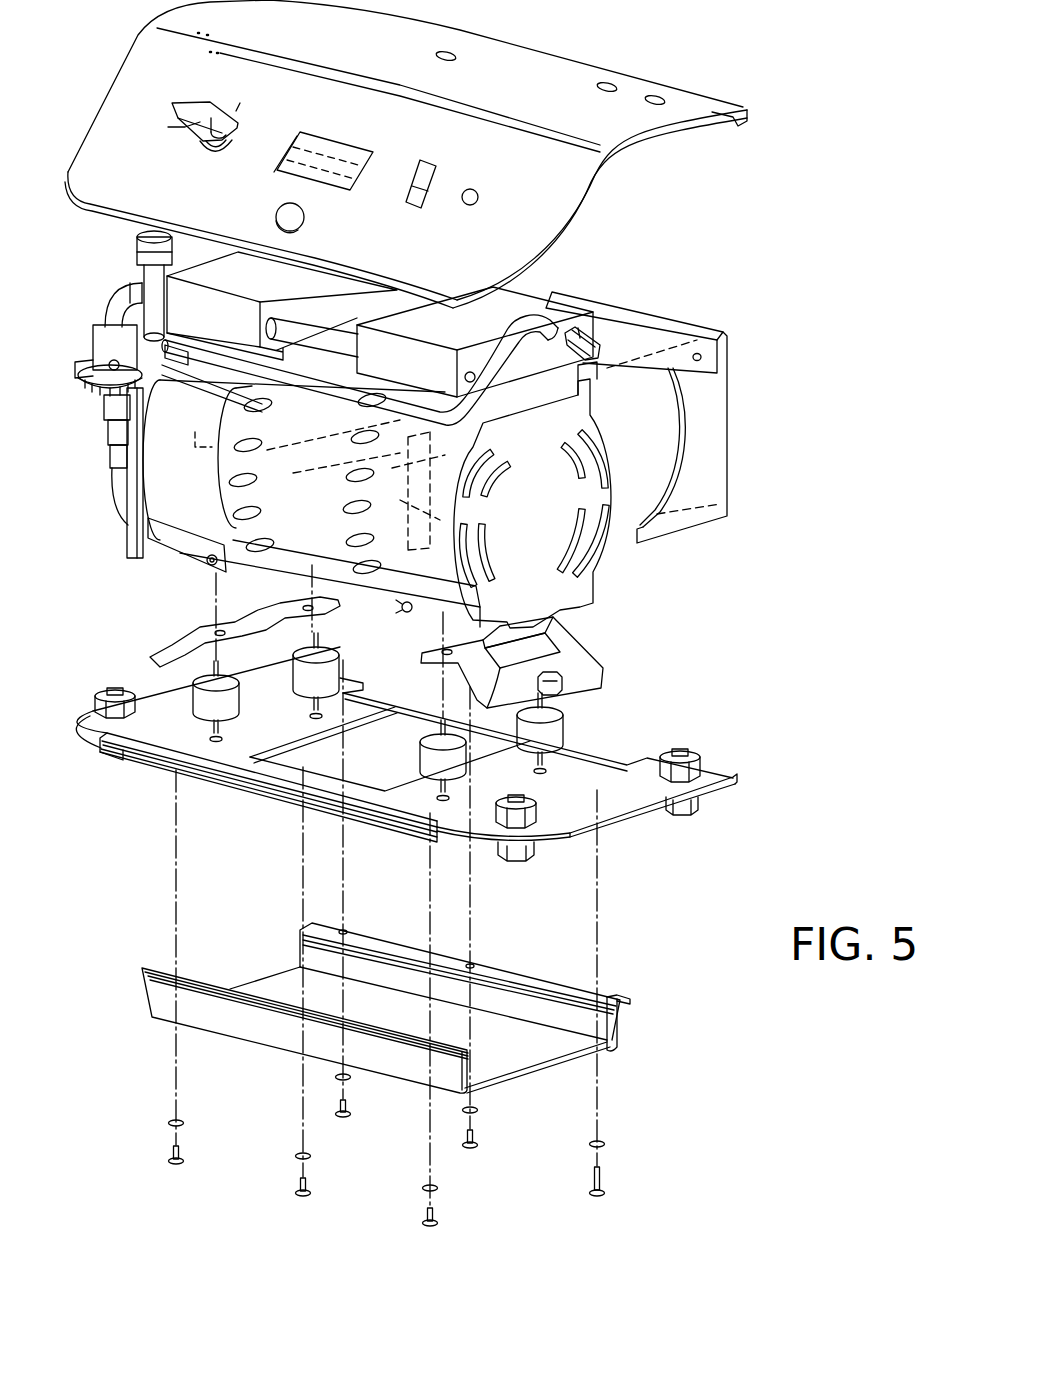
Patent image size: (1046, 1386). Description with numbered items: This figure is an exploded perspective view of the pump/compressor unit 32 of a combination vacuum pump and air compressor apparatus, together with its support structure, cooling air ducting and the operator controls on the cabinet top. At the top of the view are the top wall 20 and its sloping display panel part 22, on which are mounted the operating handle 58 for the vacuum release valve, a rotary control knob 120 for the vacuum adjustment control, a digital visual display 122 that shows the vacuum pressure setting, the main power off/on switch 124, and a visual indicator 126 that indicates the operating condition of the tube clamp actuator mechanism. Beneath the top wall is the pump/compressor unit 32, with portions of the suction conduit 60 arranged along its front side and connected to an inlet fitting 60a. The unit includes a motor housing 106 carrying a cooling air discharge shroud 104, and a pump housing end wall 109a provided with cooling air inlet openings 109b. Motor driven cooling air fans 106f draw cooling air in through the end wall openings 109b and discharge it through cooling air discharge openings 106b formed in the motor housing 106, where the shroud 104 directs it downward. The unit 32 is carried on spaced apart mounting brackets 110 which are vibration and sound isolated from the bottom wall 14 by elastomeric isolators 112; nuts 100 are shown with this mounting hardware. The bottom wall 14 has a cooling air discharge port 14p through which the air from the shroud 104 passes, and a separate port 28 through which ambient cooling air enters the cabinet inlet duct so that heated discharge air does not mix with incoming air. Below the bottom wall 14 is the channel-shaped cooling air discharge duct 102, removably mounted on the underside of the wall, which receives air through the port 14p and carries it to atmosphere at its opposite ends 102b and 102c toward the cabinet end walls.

The top wall 20 is at (562, 80).
The display panel part 22 is at (565, 188).
The operating handle 58 is at (198, 132).
The digital visual display 122 is at (335, 144).
The main power off/on switch 124 is at (433, 164).
The visual indicator 126 is at (471, 207).
The rotary control knob 120 is at (303, 226).
The suction conduit 60 is at (347, 401).
The inlet fitting 60a is at (588, 317).
The motor housing 106 is at (223, 497).
The cooling air discharge openings 106b is at (265, 506).
The motor driven cooling air fans 106f is at (195, 432).
The housing end wall 109a is at (560, 513).
The cooling air inlet openings 109b is at (585, 437).
The cooling air discharge shroud 104 is at (715, 423).
The pump/compressor unit 32 is at (614, 582).
The mounting brackets 110 is at (172, 636).
The elastomeric isolators 112 is at (225, 708).
The port 28 is at (405, 682).
The bottom wall 14 is at (85, 748).
The cooling air discharge port 14p is at (348, 738).
The nuts 100 is at (517, 850).
The cooling air discharge duct 102 is at (270, 1050).
The duct end 102c is at (297, 953).
The duct end 102b is at (617, 1038).